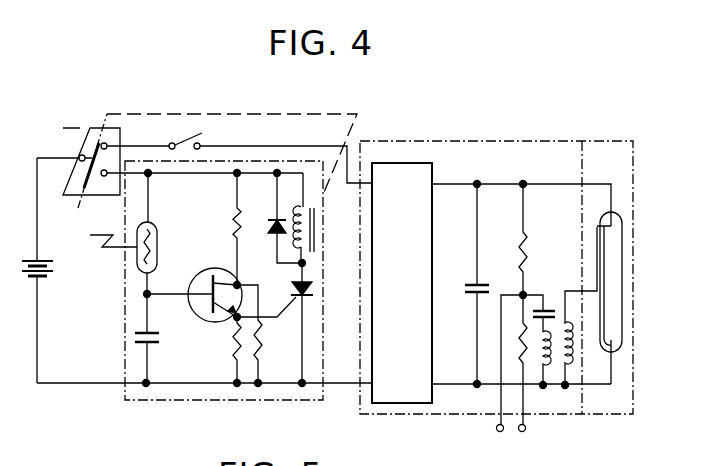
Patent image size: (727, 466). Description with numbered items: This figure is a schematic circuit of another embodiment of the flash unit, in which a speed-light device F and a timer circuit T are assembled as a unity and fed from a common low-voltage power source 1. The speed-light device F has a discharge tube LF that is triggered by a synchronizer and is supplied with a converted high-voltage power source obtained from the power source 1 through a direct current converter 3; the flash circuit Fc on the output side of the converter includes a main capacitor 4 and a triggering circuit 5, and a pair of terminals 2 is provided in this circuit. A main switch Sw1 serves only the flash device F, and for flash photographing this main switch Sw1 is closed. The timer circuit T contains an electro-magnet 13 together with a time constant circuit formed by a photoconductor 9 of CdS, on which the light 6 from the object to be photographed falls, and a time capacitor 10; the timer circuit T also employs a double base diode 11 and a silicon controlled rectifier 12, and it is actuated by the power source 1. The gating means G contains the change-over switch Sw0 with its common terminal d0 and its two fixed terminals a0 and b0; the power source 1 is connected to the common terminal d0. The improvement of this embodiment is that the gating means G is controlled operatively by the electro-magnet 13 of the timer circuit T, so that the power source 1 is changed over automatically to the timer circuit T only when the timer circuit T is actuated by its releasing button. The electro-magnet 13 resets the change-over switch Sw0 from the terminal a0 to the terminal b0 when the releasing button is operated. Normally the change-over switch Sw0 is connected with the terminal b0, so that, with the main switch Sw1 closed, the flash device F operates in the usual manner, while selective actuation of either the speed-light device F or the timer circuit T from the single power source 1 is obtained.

The power source 1 is at (45, 275).
The indicating discharge lamp 2 is at (500, 432).
The direct current converter 3 is at (395, 165).
The main capacitor 4 is at (465, 285).
The triggering circuit 5 is at (558, 307).
The light from an object to be photographed 6 is at (107, 235).
The photoconductor 9 is at (158, 243).
The time capacitor 10 is at (148, 348).
The double base diode 11 is at (213, 320).
The silicon controlled rectifier 12 is at (313, 283).
The electro-magnet 13 is at (314, 227).
The timer circuit T is at (222, 163).
The change-over switch Sw0 is at (81, 172).
The main switch Sw1 is at (270, 137).
The gating means G is at (85, 128).
The terminal a0 is at (104, 176).
The terminal b0 is at (107, 143).
The switch common terminal d0 is at (64, 151).
The flash circuit Fc is at (455, 141).
The speed-light device F is at (618, 414).
The discharge tube LF is at (617, 293).